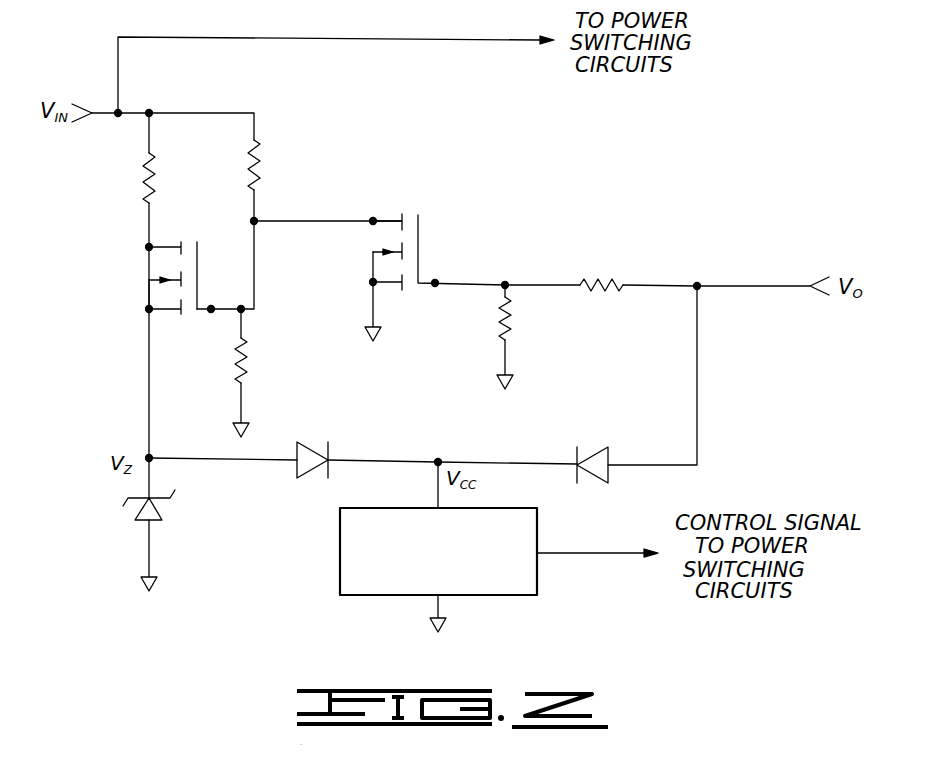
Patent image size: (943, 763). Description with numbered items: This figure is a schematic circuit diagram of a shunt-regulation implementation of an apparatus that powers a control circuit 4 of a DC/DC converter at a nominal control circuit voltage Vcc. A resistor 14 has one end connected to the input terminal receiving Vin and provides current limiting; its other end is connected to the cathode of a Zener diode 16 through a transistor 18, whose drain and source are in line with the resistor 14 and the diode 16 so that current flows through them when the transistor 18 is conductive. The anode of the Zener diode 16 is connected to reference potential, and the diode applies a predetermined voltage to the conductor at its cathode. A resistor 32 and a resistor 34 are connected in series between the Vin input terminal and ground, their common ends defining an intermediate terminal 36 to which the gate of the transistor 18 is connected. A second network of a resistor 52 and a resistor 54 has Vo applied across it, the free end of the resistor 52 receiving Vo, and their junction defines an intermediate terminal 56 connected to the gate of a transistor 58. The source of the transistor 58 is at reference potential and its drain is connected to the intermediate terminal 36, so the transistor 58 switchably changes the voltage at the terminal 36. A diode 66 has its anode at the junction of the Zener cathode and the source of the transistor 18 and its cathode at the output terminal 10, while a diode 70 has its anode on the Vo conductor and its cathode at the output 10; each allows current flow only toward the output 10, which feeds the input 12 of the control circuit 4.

The control circuit 4 is at (339, 554).
The output terminal 10 is at (440, 458).
The input of the load 12 is at (436, 503).
The resistor 14 is at (158, 170).
The Zener diode 16 is at (160, 510).
The transistor 18 is at (197, 272).
The resistor 32 is at (258, 148).
The resistor 34 is at (236, 372).
The intermediate terminal 36 is at (238, 313).
The resistor 52 is at (597, 292).
The resistor 54 is at (502, 328).
The intermediate terminal 56 is at (503, 278).
The transistor 58 is at (421, 232).
The diode 66 is at (313, 477).
The diode 70 is at (610, 455).